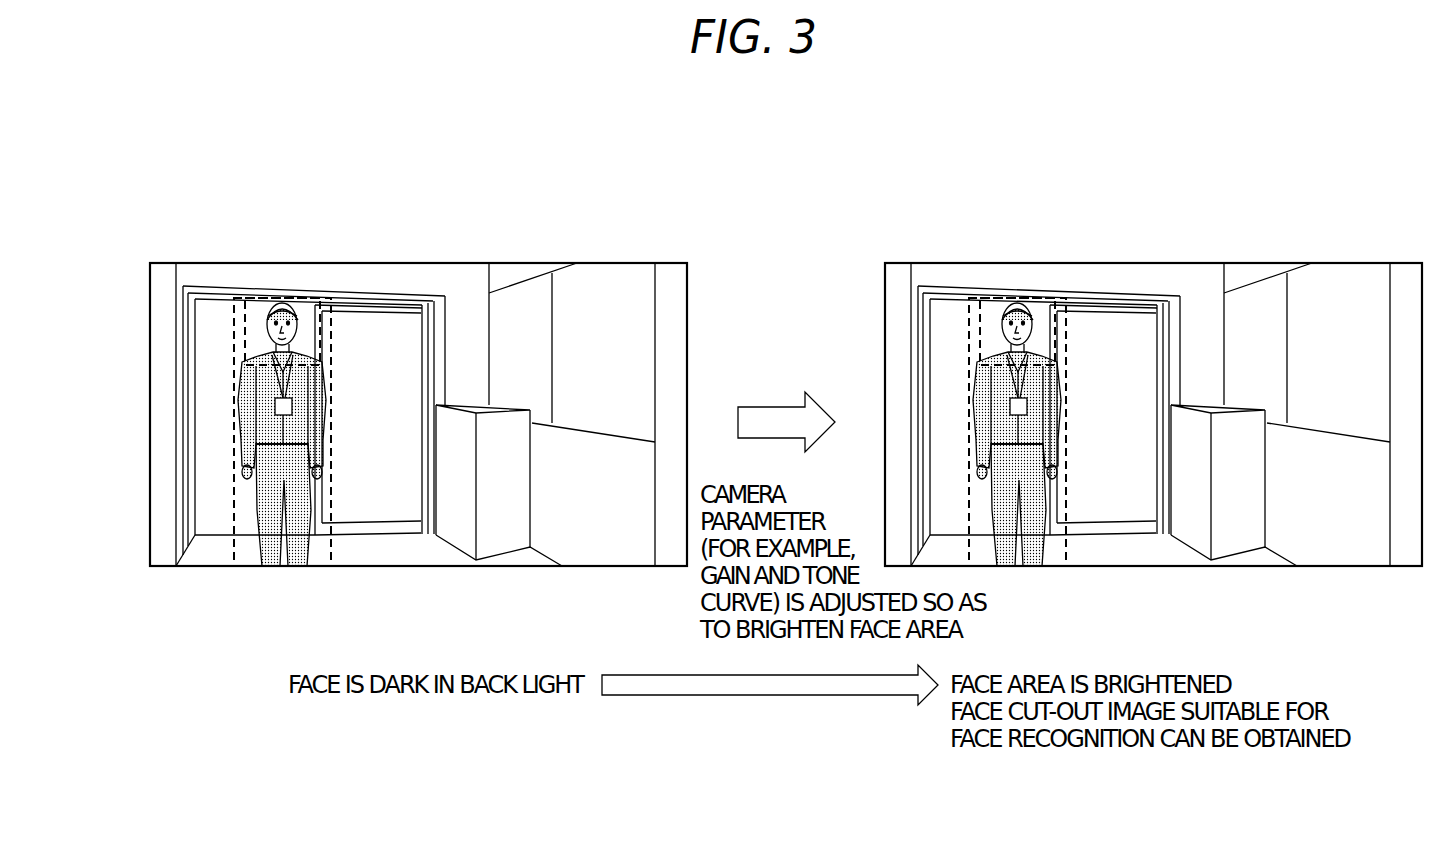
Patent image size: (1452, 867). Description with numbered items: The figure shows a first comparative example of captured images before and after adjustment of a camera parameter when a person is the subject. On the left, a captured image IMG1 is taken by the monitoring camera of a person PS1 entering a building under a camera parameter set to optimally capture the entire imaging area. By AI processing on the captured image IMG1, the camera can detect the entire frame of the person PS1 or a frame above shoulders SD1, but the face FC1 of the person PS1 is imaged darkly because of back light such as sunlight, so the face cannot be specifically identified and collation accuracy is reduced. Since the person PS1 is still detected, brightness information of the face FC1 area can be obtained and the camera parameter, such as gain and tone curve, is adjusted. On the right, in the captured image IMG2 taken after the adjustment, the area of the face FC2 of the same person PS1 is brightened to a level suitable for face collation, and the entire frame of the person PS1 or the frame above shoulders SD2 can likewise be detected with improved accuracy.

The captured image IMG1 is at (460, 255).
The captured image IMG2 is at (1195, 255).
The person PS1 is at (332, 548).
The frame above shoulders SD1 is at (242, 347).
The frame above shoulders SD2 is at (977, 347).
The face FC1 is at (302, 327).
The face FC2 is at (1037, 327).